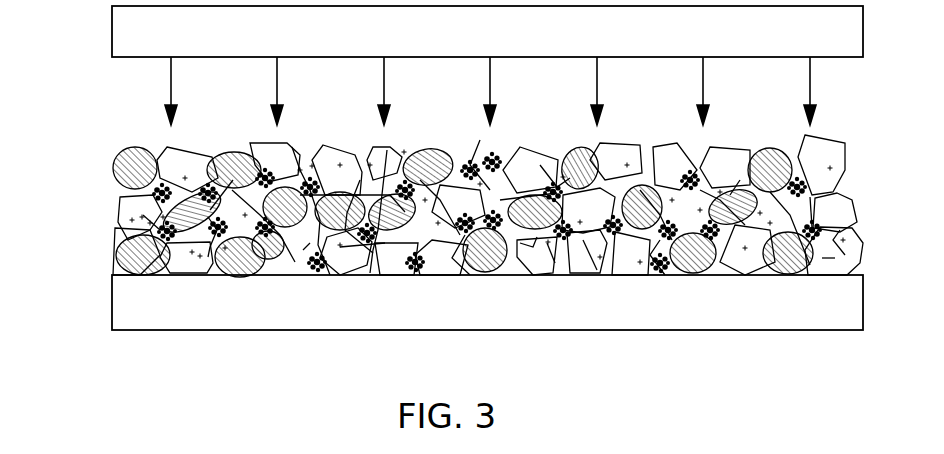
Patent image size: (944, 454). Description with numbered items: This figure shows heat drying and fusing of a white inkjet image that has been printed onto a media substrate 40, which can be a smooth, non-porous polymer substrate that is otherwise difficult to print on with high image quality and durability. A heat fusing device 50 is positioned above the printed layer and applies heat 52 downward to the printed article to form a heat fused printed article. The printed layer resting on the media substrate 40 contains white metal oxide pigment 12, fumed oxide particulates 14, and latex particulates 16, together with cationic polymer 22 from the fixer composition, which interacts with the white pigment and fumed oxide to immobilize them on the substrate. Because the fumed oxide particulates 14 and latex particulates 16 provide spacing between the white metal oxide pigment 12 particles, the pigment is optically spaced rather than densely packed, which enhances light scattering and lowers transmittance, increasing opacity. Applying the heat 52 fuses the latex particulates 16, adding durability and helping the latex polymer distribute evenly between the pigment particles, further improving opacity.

The heat fusing device 50 is at (501, 43).
The media substrate 40 is at (501, 313).
The heat 52 is at (171, 80).
The cationic polymer 22 is at (130, 170).
The latex particulates 16 is at (135, 173).
The white metal oxide pigment 12 is at (135, 212).
The fumed oxide particulates 14 is at (160, 235).